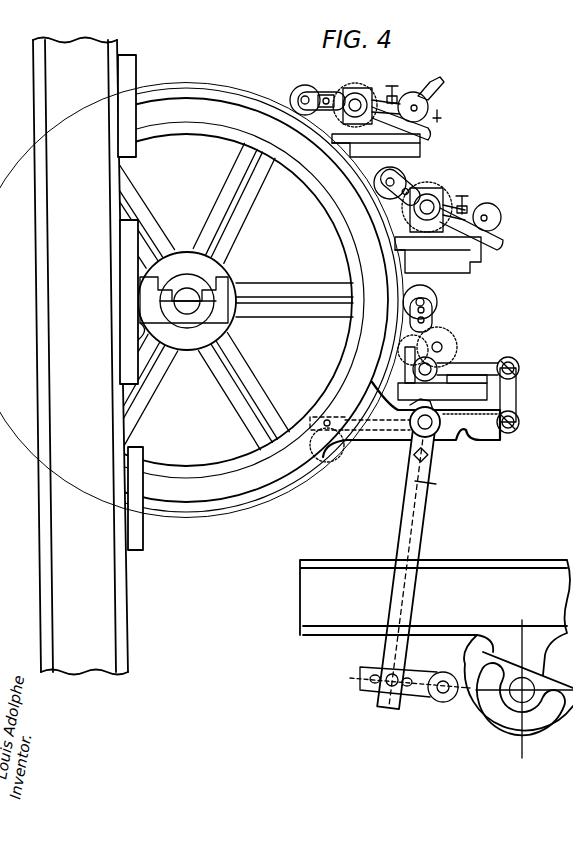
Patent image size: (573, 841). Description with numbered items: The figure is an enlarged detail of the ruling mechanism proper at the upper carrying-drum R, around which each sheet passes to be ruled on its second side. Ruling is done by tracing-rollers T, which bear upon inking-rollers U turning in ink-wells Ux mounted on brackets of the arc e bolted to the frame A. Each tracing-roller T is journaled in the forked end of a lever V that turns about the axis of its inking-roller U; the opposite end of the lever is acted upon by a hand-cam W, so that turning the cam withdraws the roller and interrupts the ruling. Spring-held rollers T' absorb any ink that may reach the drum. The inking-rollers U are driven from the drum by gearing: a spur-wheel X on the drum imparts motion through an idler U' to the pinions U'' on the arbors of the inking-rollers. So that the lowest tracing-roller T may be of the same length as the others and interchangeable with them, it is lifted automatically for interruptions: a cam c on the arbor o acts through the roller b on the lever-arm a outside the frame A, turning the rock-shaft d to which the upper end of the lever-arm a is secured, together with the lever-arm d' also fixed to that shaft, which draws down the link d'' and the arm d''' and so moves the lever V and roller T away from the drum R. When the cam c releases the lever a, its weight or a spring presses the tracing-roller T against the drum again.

The frame A is at (303, 384).
The carrying-drum R is at (258, 284).
The arc e is at (199, 300).
The spur-wheel X is at (382, 378).
The tracing-roller T is at (413, 239).
The spring-held roller T' is at (292, 94).
The lever V is at (318, 92).
The inking-roller U is at (355, 96).
The ink-well Ux is at (376, 108).
The idler U' is at (421, 268).
The pinion U'' is at (426, 217).
The hand-cam W is at (430, 106).
The rock-shaft d is at (428, 431).
The lever-arm d' is at (505, 433).
The link d'' is at (522, 395).
The arm d''' is at (478, 358).
The lever-arm a is at (406, 565).
The roller b is at (445, 674).
The cam c is at (517, 699).
The arbor o is at (532, 684).